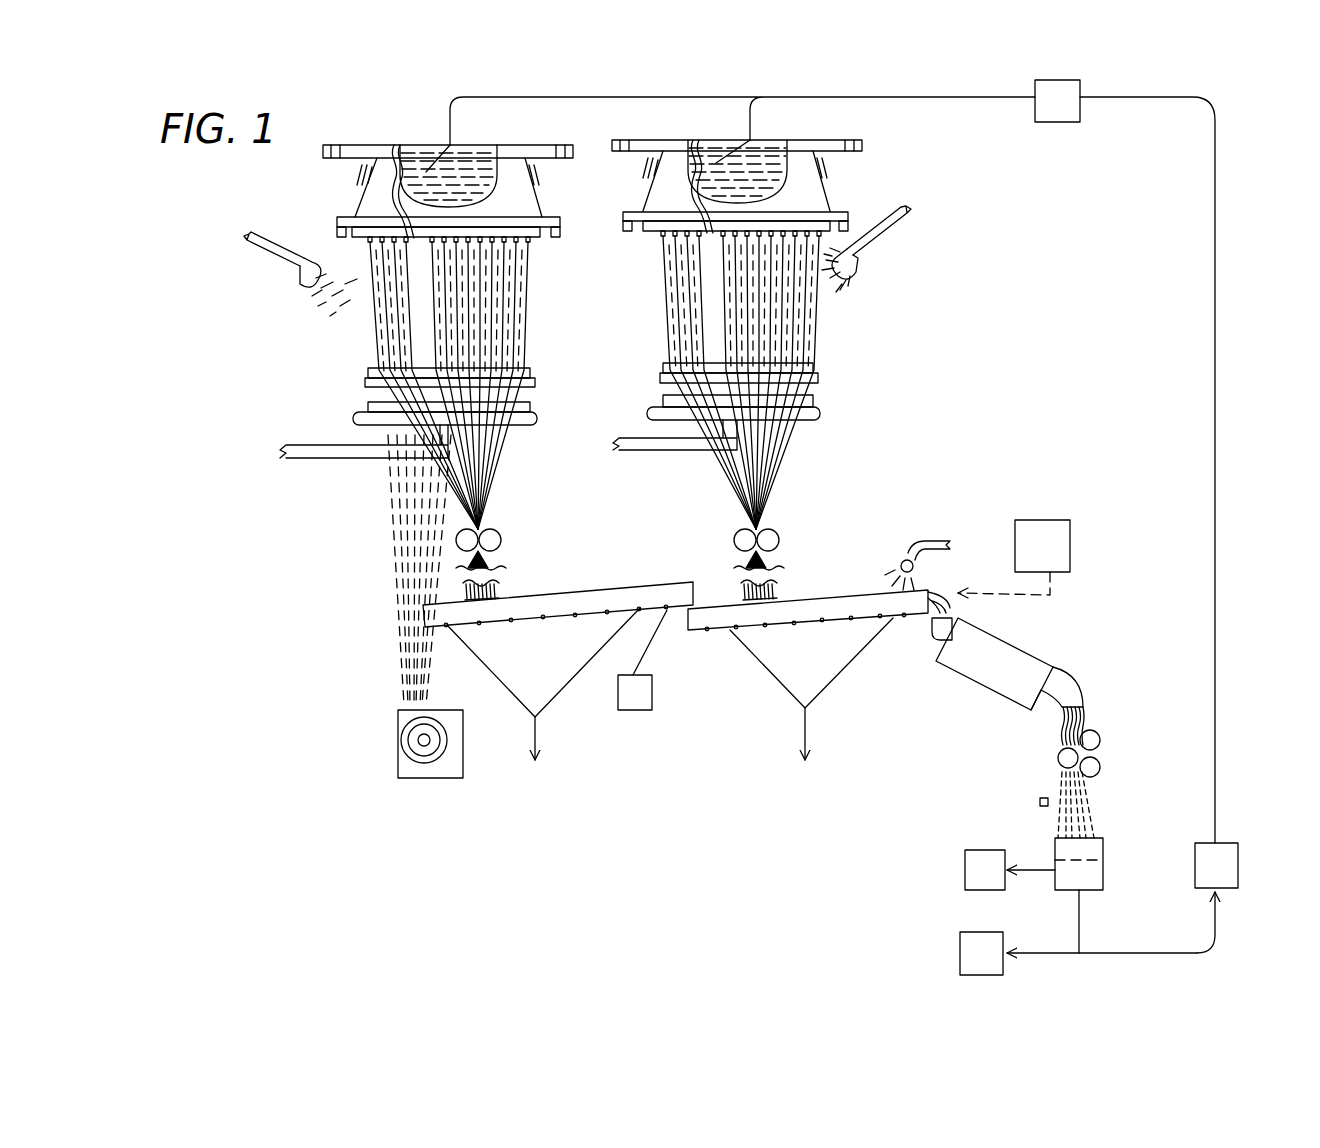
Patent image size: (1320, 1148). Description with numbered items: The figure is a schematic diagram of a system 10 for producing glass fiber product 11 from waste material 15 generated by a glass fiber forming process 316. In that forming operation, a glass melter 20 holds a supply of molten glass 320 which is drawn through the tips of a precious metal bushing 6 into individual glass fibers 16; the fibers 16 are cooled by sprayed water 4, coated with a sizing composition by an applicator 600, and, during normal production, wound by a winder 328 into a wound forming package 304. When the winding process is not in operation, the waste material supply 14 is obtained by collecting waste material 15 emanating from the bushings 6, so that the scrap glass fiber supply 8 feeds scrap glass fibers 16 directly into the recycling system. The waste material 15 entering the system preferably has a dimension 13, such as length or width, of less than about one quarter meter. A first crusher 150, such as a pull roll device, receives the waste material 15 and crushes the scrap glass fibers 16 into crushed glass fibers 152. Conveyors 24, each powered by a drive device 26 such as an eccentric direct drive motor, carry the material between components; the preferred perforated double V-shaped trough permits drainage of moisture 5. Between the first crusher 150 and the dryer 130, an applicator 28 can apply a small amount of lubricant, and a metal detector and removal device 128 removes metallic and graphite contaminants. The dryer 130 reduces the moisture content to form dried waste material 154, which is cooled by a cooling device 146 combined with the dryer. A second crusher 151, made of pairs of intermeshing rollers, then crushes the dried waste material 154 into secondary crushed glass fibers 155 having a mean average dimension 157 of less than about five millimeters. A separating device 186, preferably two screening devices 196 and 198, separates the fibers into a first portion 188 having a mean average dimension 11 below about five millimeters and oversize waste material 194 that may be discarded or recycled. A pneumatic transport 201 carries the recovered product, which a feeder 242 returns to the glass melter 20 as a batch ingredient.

The water 4 is at (888, 242).
The moisture 5 is at (513, 700).
The bushing 6 is at (656, 236).
The scrap glass fiber supply 8 is at (663, 267).
The system 10 is at (895, 462).
The mean average dimension 11 is at (1082, 922).
The dimension 13 is at (728, 582).
The waste material supply 14 is at (533, 254).
The waste material 15 is at (533, 296).
The scrap glass fibers 16 is at (785, 462).
The glass melter 20 is at (545, 146).
The conveyor 24 is at (552, 590).
The drive device 26 is at (632, 710).
The applicator 28 is at (925, 540).
The metal detector and removal device 128 is at (1040, 518).
The dryer 130 is at (958, 670).
The cooling device 146 is at (1048, 675).
The first crusher 150 is at (500, 530).
The second crusher 151 is at (1090, 738).
The crushed glass fibers 152 is at (783, 600).
The dried waste material 154 is at (1050, 714).
The secondary crushed glass fibers 155 is at (1093, 803).
The mean average dimension 157 is at (1043, 797).
The separating device 186 is at (1103, 868).
The first portion 188 is at (1078, 903).
The oversize waste material 194 is at (1033, 862).
The screening device 196 is at (1103, 840).
The screening device 198 is at (1103, 886).
The pneumatic transport 201 is at (1240, 868).
The feeder 242 is at (1050, 122).
The wound forming package 304 is at (432, 765).
The glass fiber forming process 316 is at (360, 336).
The molten glass 320 is at (707, 148).
The winder 328 is at (400, 733).
The applicator 600 is at (818, 398).